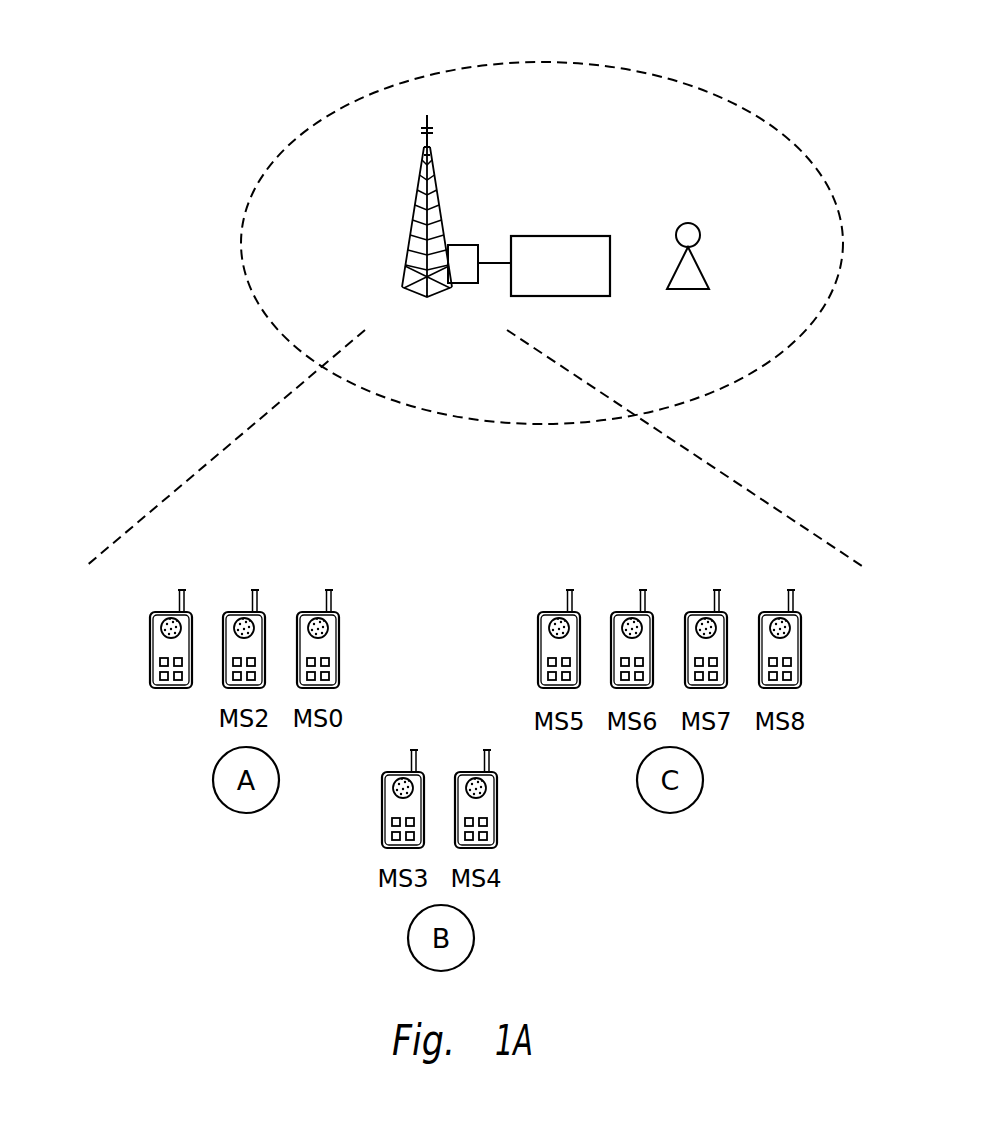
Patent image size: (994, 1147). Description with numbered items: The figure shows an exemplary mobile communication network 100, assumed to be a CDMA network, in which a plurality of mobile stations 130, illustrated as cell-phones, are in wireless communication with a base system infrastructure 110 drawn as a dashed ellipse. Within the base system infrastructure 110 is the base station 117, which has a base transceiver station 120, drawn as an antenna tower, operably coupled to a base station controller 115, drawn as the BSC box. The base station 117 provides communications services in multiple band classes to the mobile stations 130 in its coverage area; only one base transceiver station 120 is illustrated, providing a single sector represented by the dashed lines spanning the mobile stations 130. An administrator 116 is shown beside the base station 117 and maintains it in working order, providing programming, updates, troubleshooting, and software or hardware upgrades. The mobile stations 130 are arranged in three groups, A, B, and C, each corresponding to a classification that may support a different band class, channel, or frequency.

The mobile communication network 100 is at (170, 84).
The base system infrastructure 110 is at (543, 62).
The base station controller 115 is at (561, 236).
The administrator 116 is at (697, 262).
The base station 117 is at (465, 245).
The base transceiver station 120 is at (437, 190).
The mobile stations 130 is at (150, 638).